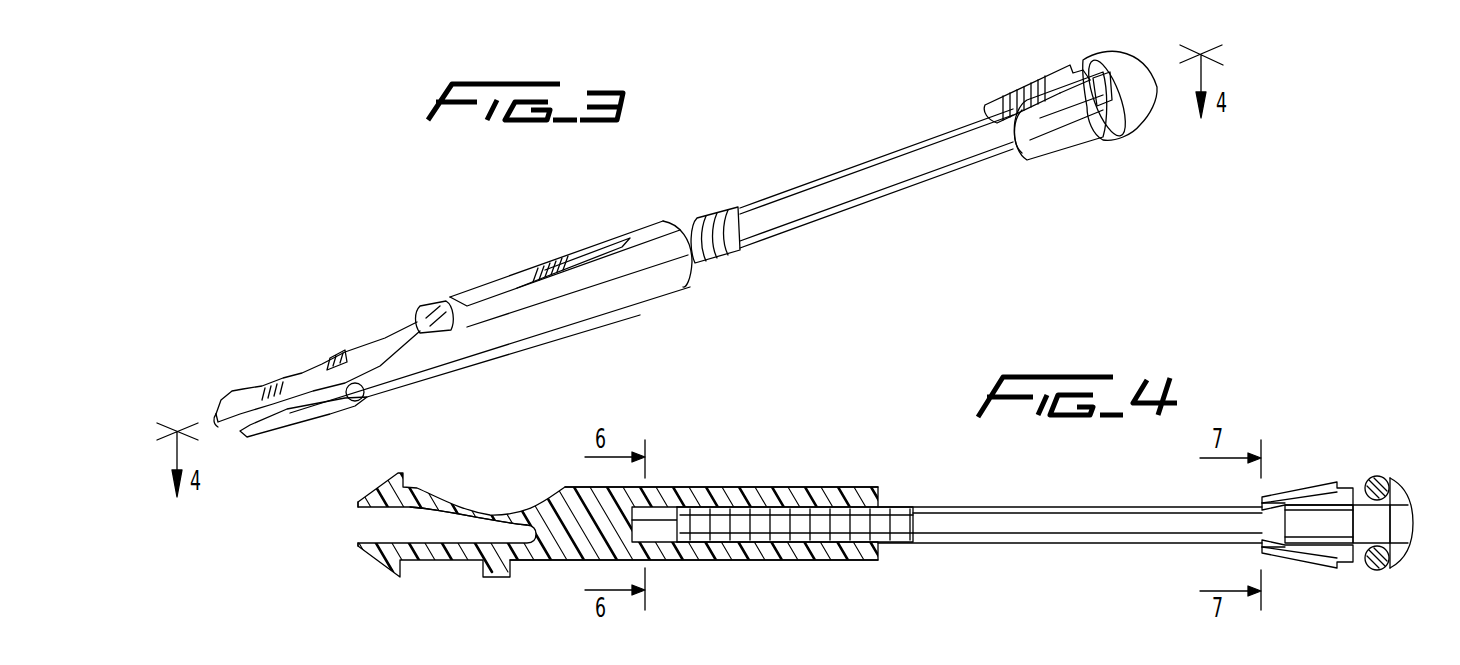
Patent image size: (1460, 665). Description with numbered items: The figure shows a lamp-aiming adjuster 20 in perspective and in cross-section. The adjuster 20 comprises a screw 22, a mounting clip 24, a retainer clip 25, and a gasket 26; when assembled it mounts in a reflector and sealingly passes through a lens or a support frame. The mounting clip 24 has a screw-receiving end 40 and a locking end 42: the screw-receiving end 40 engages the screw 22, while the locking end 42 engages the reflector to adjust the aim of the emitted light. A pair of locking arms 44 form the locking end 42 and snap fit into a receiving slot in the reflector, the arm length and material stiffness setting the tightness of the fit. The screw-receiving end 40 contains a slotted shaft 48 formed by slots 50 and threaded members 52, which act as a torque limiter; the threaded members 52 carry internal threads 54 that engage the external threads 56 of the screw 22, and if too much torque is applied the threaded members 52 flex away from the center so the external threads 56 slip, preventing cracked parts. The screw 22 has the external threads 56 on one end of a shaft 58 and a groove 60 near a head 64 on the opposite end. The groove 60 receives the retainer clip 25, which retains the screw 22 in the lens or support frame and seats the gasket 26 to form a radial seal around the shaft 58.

In FIG. 3, the adjuster 20 is at (708, 204).
In FIG. 3, the screw 22 is at (820, 219).
In FIG. 4, the screw 22 is at (1030, 544).
In FIG. 3, the mounting clip 24 is at (407, 373).
In FIG. 4, the mounting clip 24 is at (565, 546).
In FIG. 3, the retainer clip 25 is at (1065, 140).
In FIG. 4, the retainer clip 25 is at (1300, 490).
In FIG. 3, the gasket 26 is at (1120, 137).
In FIG. 4, the gasket 26 is at (1368, 480).
In FIG. 4, the screw-receiving end 40 is at (875, 500).
In FIG. 4, the locking end 42 is at (480, 515).
In FIG. 4, the locking arms 44 is at (360, 546).
In FIG. 4, the slotted shaft 48 is at (660, 533).
In FIG. 3, the slots 50 is at (583, 253).
In FIG. 3, the threaded members 52 is at (593, 290).
In FIG. 4, the internal threads 54 is at (758, 458).
In FIG. 3, the external threads 56 is at (723, 253).
In FIG. 4, the external threads 56 is at (897, 530).
In FIG. 3, the shaft 58 is at (837, 183).
In FIG. 3, the groove 60 is at (1000, 160).
In FIG. 4, the groove 60 is at (1260, 511).
In FIG. 4, the head 64 is at (1410, 527).